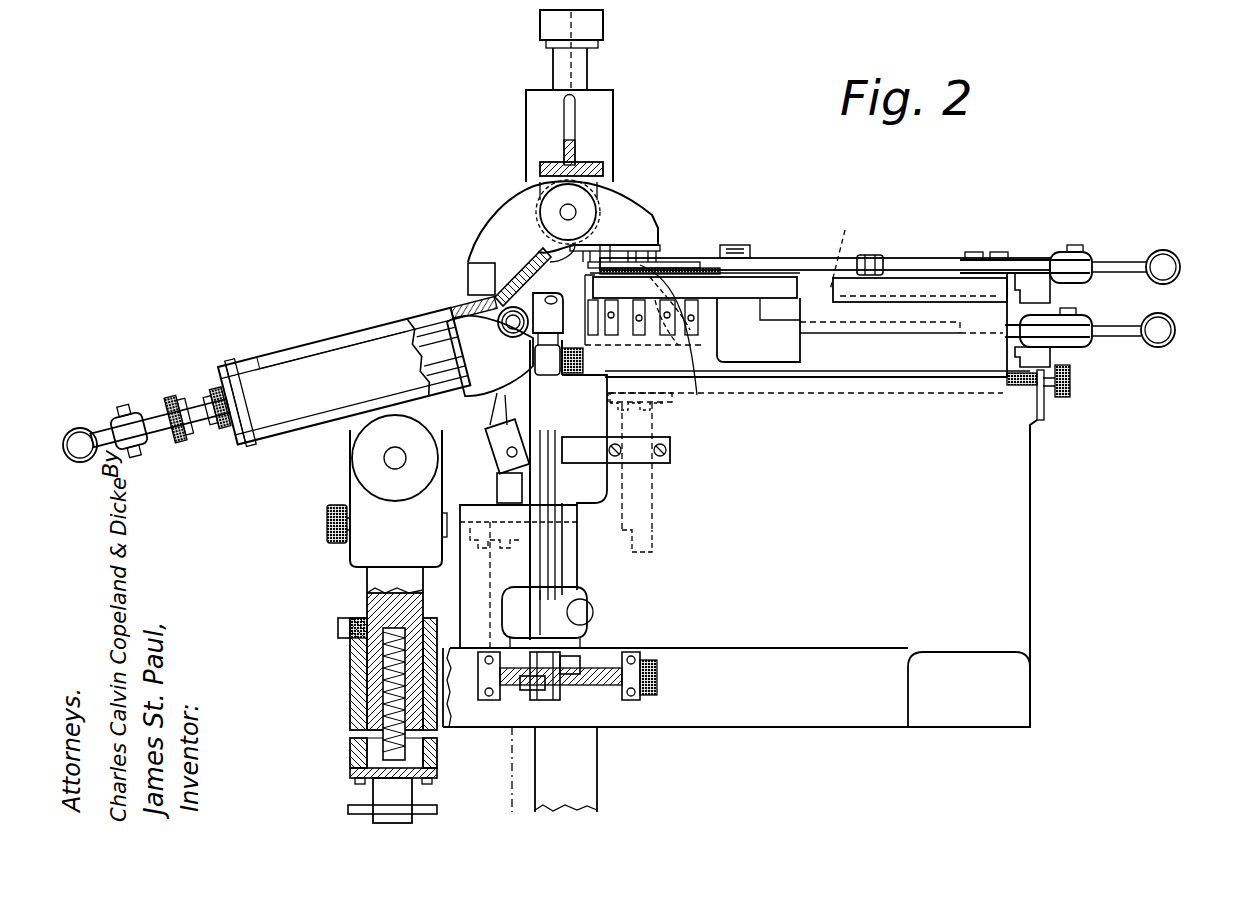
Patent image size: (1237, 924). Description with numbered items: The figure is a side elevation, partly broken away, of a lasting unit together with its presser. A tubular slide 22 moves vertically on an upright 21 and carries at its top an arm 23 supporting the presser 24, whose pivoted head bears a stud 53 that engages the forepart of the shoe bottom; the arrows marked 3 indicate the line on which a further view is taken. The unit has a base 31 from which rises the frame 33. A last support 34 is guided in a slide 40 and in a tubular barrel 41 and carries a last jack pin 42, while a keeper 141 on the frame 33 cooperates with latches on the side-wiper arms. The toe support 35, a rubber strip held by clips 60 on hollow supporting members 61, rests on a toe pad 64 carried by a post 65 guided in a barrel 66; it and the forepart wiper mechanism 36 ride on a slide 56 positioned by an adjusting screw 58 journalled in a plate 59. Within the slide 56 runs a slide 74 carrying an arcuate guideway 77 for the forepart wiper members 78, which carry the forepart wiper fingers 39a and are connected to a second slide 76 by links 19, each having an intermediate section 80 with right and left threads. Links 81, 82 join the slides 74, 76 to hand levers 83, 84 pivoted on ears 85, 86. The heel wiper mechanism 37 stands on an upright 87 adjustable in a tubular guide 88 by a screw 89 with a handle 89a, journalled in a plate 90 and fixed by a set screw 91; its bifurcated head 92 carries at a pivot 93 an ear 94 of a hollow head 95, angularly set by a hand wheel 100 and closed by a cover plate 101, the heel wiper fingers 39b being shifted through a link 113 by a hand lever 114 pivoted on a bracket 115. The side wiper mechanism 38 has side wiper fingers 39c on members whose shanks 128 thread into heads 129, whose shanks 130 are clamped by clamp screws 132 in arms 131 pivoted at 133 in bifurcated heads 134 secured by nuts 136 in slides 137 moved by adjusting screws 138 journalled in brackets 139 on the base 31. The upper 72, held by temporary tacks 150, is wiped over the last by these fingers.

The section line 3- 3 is at (560, 29).
The links 19 is at (905, 270).
The upright 21 is at (575, 70).
The tubular slide 22 is at (600, 133).
The arm 23 is at (600, 170).
The presser 24 is at (518, 222).
The base 31 is at (960, 715).
The frame 33 is at (995, 510).
The last support 34 is at (497, 493).
The toe support 35 is at (686, 348).
The forepart wiper mechanism 36 is at (816, 248).
The heel wiper mechanism 37 is at (292, 338).
The side wiper mechanism 38 is at (498, 322).
The forepart wiper fingers 39a is at (692, 268).
The heel wiper fingers 39b is at (470, 305).
The side wiper fingers 39c is at (510, 268).
The slide 40 is at (555, 520).
The tubular barrel 41 is at (488, 575).
The last jack pin 42 is at (492, 425).
The stud 53 is at (640, 255).
The slide 56 is at (905, 370).
The adjusting screw 58 is at (1065, 398).
The plate 59 is at (1040, 420).
The clips 60 is at (700, 325).
The hollow supporting members 61 is at (700, 345).
The toe pad 64 is at (608, 309).
The post 65 is at (652, 545).
The barrel 66 is at (655, 490).
The upper 72 is at (590, 262).
The slide 74 is at (780, 318).
The second slide 76 is at (850, 249).
The arcuate guideway 77 is at (770, 290).
The forepart end wiper members 78 is at (750, 275).
The intermediate section 80 is at (870, 258).
The link 81 is at (1060, 330).
The link 82 is at (1000, 265).
The hand lever 83 is at (1160, 340).
The hand lever 84 is at (1180, 260).
The ear 85 is at (1052, 360).
The ear 86 is at (1058, 300).
The upright 87 is at (382, 586).
The tubular guide 88 is at (362, 678).
The screw 89 is at (370, 712).
The handle 89a is at (355, 808).
The plate 90 is at (352, 772).
The set screw 91 is at (338, 638).
The bifurcated head 92 is at (348, 505).
The pivot 93 is at (388, 460).
The ear 94 is at (352, 458).
The head 95 is at (262, 440).
The hand wheel 100 is at (332, 525).
The cover plate 101 is at (335, 345).
The link 113 is at (172, 400).
The hand lever 114 is at (78, 430).
The bracket 115 is at (190, 385).
The shanks 128 is at (472, 282).
The heads 129 is at (568, 320).
The shanks 130 is at (490, 355).
The arms 131 is at (545, 575).
The clamp screws 132 is at (575, 375).
The pivot 133 is at (590, 600).
The bifurcated heads 134 is at (575, 640).
The nuts 136 is at (535, 690).
The slides 137 is at (548, 700).
The adjusting screws 138 is at (600, 686).
The brackets 139 is at (482, 700).
The keepers 141 is at (585, 460).
The temporary tacks 150 is at (440, 376).